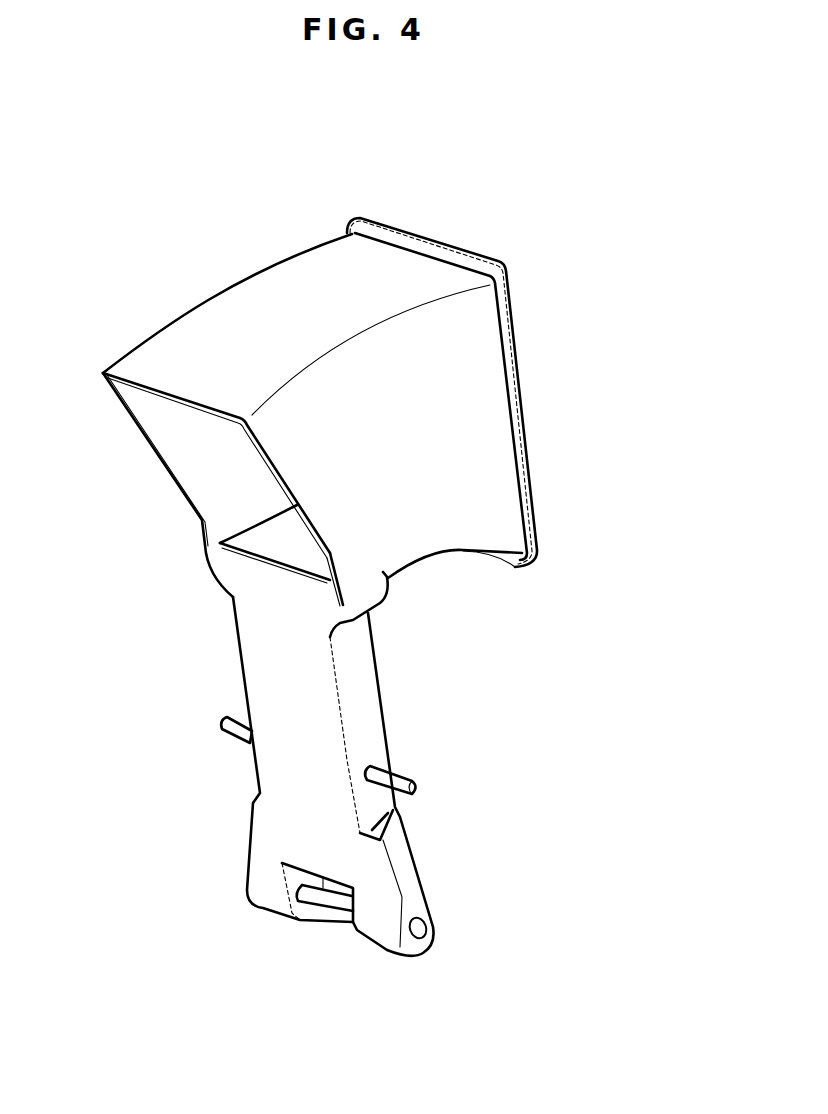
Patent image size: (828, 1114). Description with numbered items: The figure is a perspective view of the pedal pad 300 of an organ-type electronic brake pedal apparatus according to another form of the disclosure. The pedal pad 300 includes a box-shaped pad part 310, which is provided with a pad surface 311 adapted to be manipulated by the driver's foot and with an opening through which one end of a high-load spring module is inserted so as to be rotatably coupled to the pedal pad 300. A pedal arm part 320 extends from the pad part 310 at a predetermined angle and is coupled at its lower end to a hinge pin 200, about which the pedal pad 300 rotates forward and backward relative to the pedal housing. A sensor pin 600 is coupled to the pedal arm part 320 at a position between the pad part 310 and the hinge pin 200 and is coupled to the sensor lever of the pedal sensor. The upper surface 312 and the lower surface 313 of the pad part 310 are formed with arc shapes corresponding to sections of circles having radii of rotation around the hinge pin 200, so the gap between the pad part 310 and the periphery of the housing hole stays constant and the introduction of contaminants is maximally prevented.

The pedal pad 300 is at (393, 406).
The pad part 310 is at (473, 466).
The pad surface 311 is at (523, 401).
The upper surface 312 is at (235, 308).
The lower surface 313 is at (443, 557).
The pedal arm part 320 is at (268, 673).
The sensor pin 600 is at (225, 725).
The hinge pin 200 is at (330, 903).